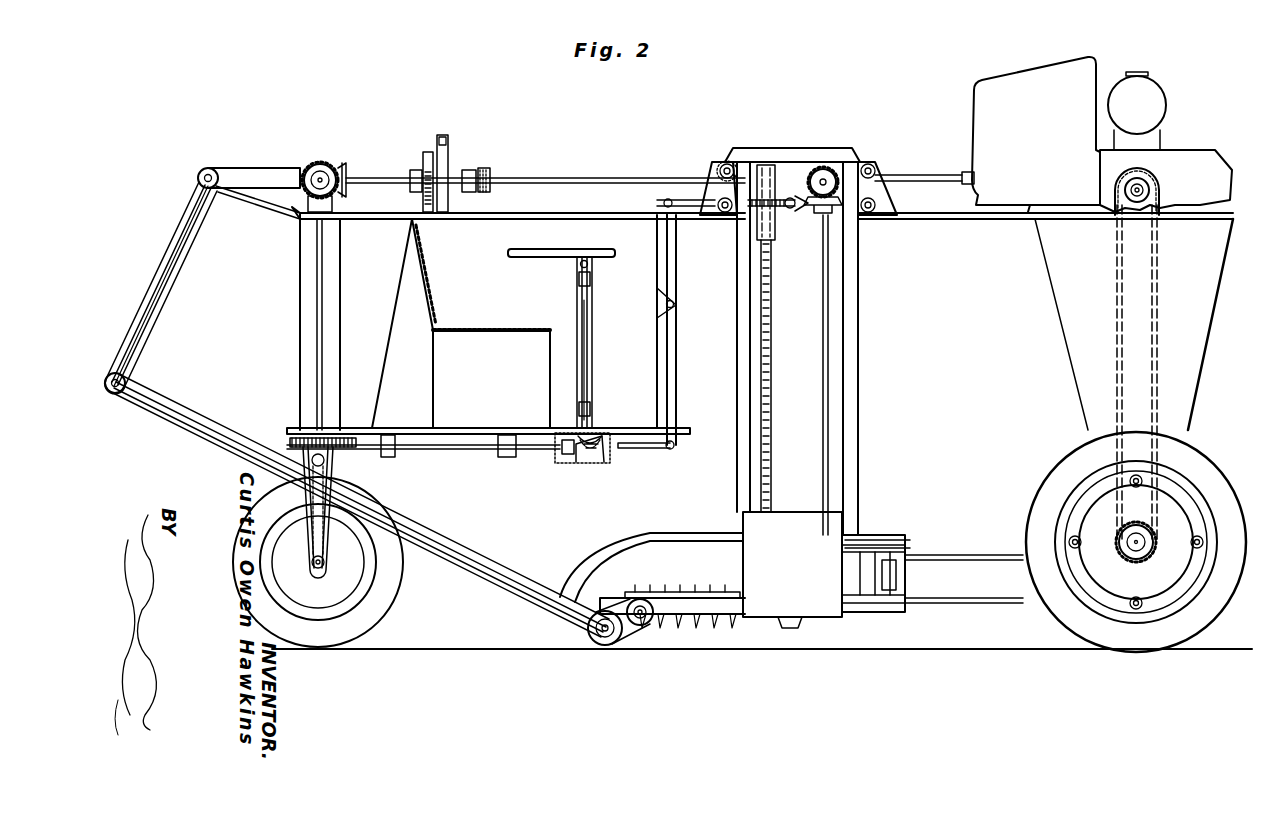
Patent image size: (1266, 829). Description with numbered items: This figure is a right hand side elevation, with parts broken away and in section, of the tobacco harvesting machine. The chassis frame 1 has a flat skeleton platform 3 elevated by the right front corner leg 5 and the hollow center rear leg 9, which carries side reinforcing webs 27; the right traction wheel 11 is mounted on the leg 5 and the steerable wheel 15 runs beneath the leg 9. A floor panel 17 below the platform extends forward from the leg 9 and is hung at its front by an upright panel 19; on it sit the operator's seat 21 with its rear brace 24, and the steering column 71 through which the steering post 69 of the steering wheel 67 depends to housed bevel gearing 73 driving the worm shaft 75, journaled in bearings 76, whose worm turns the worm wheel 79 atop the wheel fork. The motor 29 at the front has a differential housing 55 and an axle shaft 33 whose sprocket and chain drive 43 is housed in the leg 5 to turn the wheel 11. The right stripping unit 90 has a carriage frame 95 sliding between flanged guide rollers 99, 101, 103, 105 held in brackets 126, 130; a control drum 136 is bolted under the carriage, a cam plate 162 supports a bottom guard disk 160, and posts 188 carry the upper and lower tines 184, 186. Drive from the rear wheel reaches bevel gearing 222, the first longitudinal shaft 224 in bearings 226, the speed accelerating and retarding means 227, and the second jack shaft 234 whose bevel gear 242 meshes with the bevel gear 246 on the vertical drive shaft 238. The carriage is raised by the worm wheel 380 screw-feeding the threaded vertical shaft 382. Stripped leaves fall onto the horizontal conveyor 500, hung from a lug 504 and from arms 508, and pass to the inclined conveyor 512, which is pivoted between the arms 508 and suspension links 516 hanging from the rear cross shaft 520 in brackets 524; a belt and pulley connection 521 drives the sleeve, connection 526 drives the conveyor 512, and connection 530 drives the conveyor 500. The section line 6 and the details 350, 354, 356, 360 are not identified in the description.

The chassis frame 1 is at (964, 232).
The platform 3 is at (608, 210).
The front corner leg 5 is at (1070, 344).
The section line 6- 6 is at (709, 558).
The center rear leg 9 is at (302, 314).
The traction wheel 11 is at (1196, 462).
The steerable wheel 15 is at (388, 583).
The floor panel 17 is at (330, 386).
The upright panel 19 is at (658, 340).
The operator's seat 21 is at (491, 379).
The rear brace 24 is at (392, 312).
The side reinforcing webs 27 is at (318, 280).
The motor 29 is at (1036, 134).
The axle shaft 33 is at (1150, 188).
The sprocket and chain drive 43 is at (1108, 295).
The differential housing 55 is at (1190, 158).
The steering wheel 67 is at (528, 249).
The steering post 69 is at (590, 462).
The steering column 71 is at (590, 330).
The housed bevel gearing 73 is at (566, 456).
The worm shaft 75 is at (465, 449).
The bearings 76 is at (387, 452).
The worm wheel 79 is at (300, 440).
The right stripping unit 90 is at (700, 497).
The carriage frame 95 is at (860, 380).
The guide roller 99 is at (724, 162).
The guide roller 101 is at (712, 212).
The guide roller 103 is at (872, 166).
The guide roller 105 is at (876, 212).
The bracket 126 is at (716, 175).
The bracket 130 is at (878, 203).
The control drum 136 is at (865, 540).
The bottom guard disk 160 is at (870, 612).
The cam plate 162 is at (780, 600).
The upper series of stripping tines 184 is at (994, 560).
The lower series of stripping tines 186 is at (972, 603).
The posts 188 is at (898, 575).
The bevel gearing 222 is at (320, 163).
The first longitudinal shaft 224 is at (392, 185).
The bearings 226 is at (410, 176).
The speed accelerating and retarding means 227 is at (462, 152).
The second transverse jack shaft 234 is at (823, 170).
The right vertical drive shaft 238 is at (830, 447).
The bevel gear 242 is at (788, 199).
The bevel gear 246 is at (815, 213).
The seat post 350 is at (578, 299).
The collar 354 is at (592, 280).
The rod 356 is at (648, 448).
The bracket 360 is at (676, 346).
The driving worm wheel 380 is at (750, 210).
The threaded vertical shaft 382 is at (773, 476).
The horizontal endless belt conveyor 500 is at (690, 630).
The lug 504 is at (728, 612).
The arms 508 is at (586, 568).
The inclined endless belt conveyor 512 is at (500, 560).
The suspension links 516 is at (168, 305).
The rear cross shaft 520 is at (198, 178).
The belt and pulley connection 521 is at (238, 168).
The brackets 524 is at (266, 206).
The belt and pulley connection 526 is at (150, 352).
The belt and pulley connection 530 is at (628, 635).